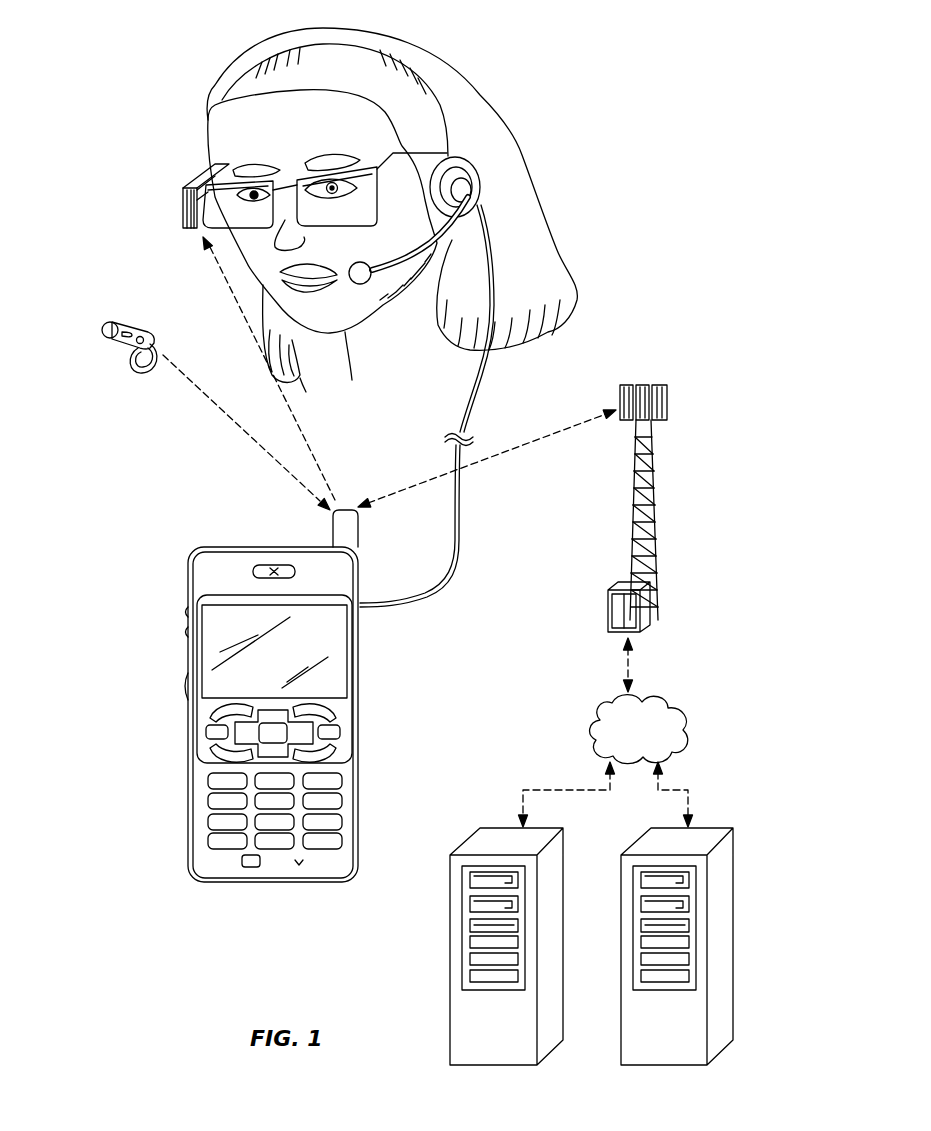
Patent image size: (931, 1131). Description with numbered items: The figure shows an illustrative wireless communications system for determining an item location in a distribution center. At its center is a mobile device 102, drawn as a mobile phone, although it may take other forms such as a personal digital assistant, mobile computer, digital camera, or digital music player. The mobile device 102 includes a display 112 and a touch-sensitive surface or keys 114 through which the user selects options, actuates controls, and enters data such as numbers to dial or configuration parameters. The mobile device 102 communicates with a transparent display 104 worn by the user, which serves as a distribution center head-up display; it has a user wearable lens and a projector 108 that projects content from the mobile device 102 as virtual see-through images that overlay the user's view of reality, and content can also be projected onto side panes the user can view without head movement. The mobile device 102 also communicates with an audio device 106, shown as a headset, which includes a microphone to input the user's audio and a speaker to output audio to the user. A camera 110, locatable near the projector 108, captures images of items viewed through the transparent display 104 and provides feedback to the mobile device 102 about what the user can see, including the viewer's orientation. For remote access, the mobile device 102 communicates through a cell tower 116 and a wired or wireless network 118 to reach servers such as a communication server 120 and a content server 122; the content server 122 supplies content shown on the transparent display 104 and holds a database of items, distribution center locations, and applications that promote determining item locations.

The mobile device 102 is at (277, 712).
The transparent display 104 is at (217, 204).
The audio device 106 is at (472, 192).
The projector 108 is at (207, 178).
The camera 110 is at (118, 321).
The display 112 is at (337, 663).
The keys 114 is at (241, 782).
The cell tower 116 is at (655, 495).
The network 118 is at (682, 714).
The communication server 120 is at (452, 944).
The content server 122 is at (736, 932).